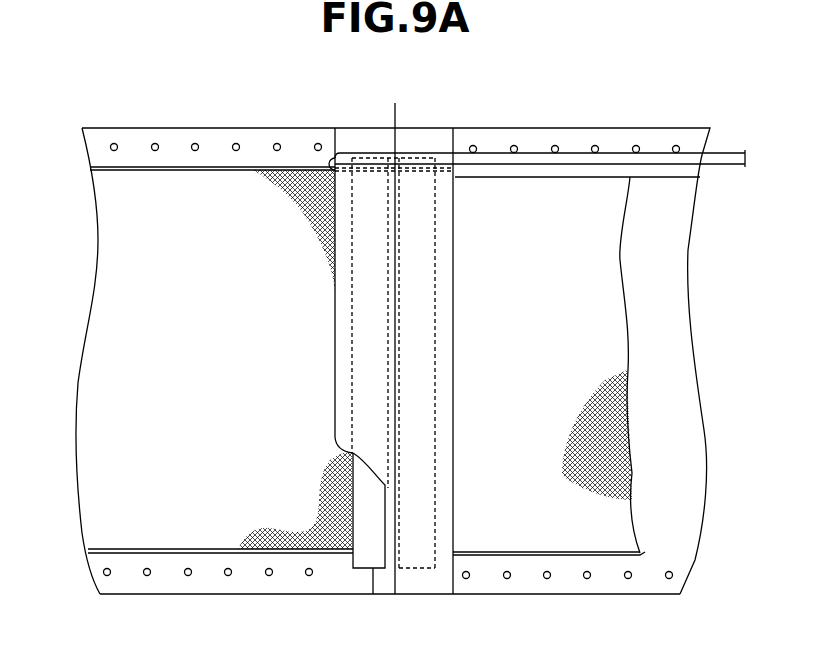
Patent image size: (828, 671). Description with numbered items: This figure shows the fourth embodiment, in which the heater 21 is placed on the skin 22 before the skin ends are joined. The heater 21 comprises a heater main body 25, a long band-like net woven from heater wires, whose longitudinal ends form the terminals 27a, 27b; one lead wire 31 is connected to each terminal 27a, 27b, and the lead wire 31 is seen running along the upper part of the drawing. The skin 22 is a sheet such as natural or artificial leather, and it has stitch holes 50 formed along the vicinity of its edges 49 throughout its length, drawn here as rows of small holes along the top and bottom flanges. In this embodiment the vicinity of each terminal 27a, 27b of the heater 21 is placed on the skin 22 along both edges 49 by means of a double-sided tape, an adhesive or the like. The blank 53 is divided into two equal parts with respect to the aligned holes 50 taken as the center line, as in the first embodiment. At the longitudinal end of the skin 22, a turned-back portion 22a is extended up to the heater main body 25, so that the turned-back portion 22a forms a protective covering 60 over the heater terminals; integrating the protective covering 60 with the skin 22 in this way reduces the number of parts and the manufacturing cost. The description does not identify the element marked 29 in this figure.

The heater 21 is at (667, 262).
The skin 22 is at (660, 117).
The turned-back portion 22a is at (418, 185).
The heater main body 25 is at (87, 418).
The terminal 27a is at (360, 548).
The terminal 27b is at (410, 530).
The bracket foot 29 is at (373, 570).
The lead wire 31 is at (728, 173).
The edges 49 is at (200, 128).
The stitch holes 50 is at (595, 150).
The blank 53 is at (137, 143).
The protective covering 60 is at (343, 403).